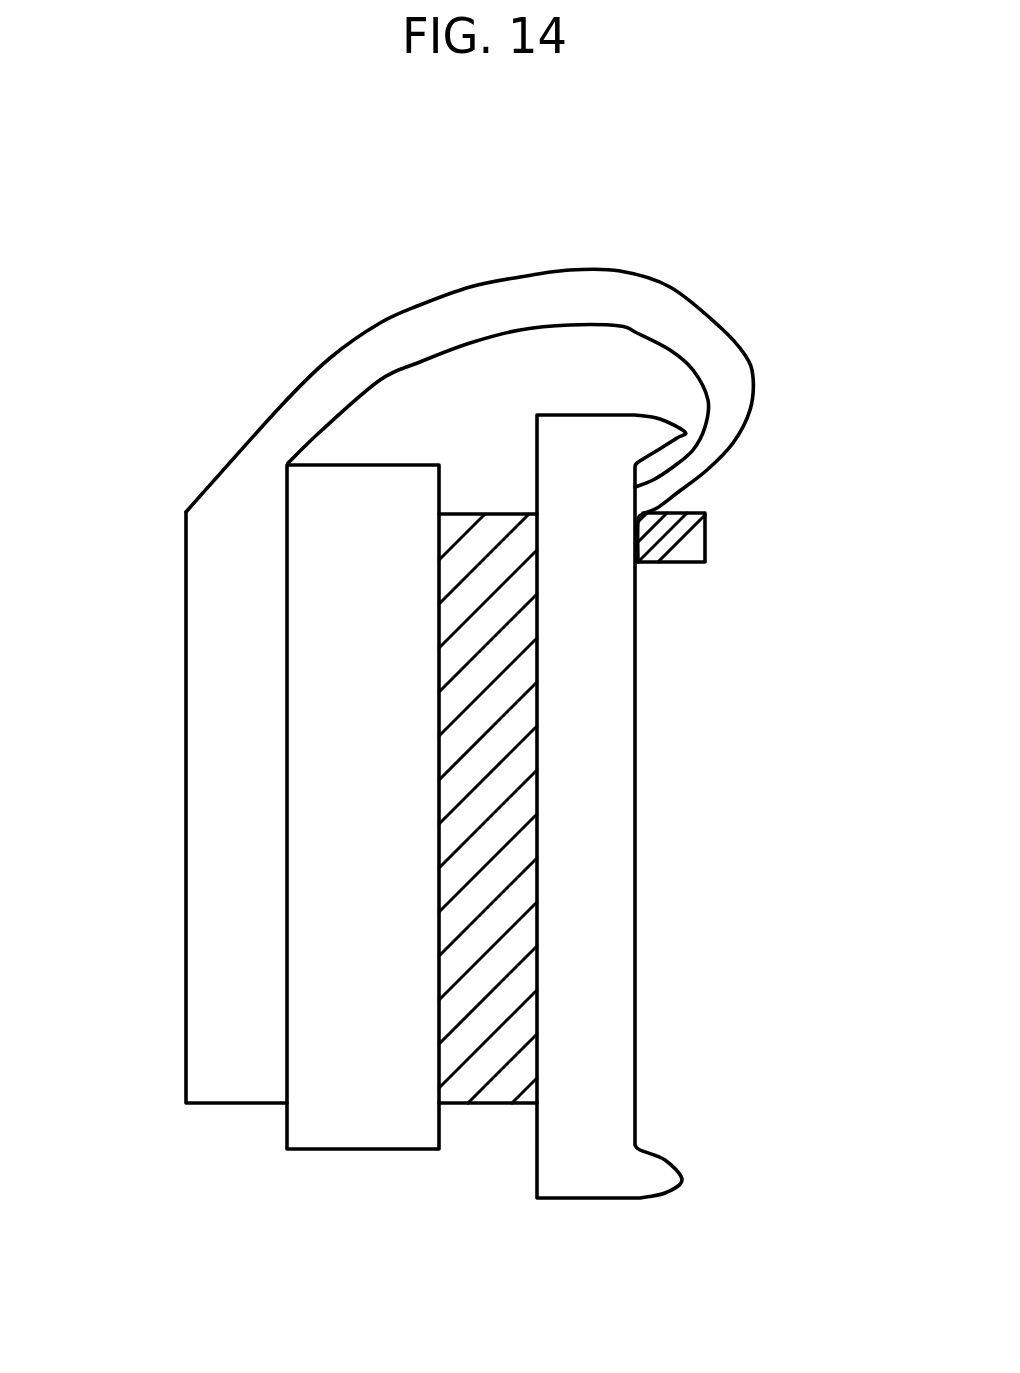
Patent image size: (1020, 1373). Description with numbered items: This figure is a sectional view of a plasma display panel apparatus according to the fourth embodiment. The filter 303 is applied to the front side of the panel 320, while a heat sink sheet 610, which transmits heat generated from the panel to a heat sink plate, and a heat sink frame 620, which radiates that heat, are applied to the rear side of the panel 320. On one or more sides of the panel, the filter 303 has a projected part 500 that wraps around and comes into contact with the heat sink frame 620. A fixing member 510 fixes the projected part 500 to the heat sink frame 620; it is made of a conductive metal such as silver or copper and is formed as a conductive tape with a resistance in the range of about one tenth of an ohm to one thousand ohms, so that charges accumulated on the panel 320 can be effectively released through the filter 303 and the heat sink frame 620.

The projected part 500 is at (737, 313).
The fixing member 510 is at (705, 543).
The filter 303 is at (242, 1092).
The panel 320 is at (352, 1137).
The heat sink sheet 610 is at (455, 1102).
The heat sink frame 620 is at (598, 1182).